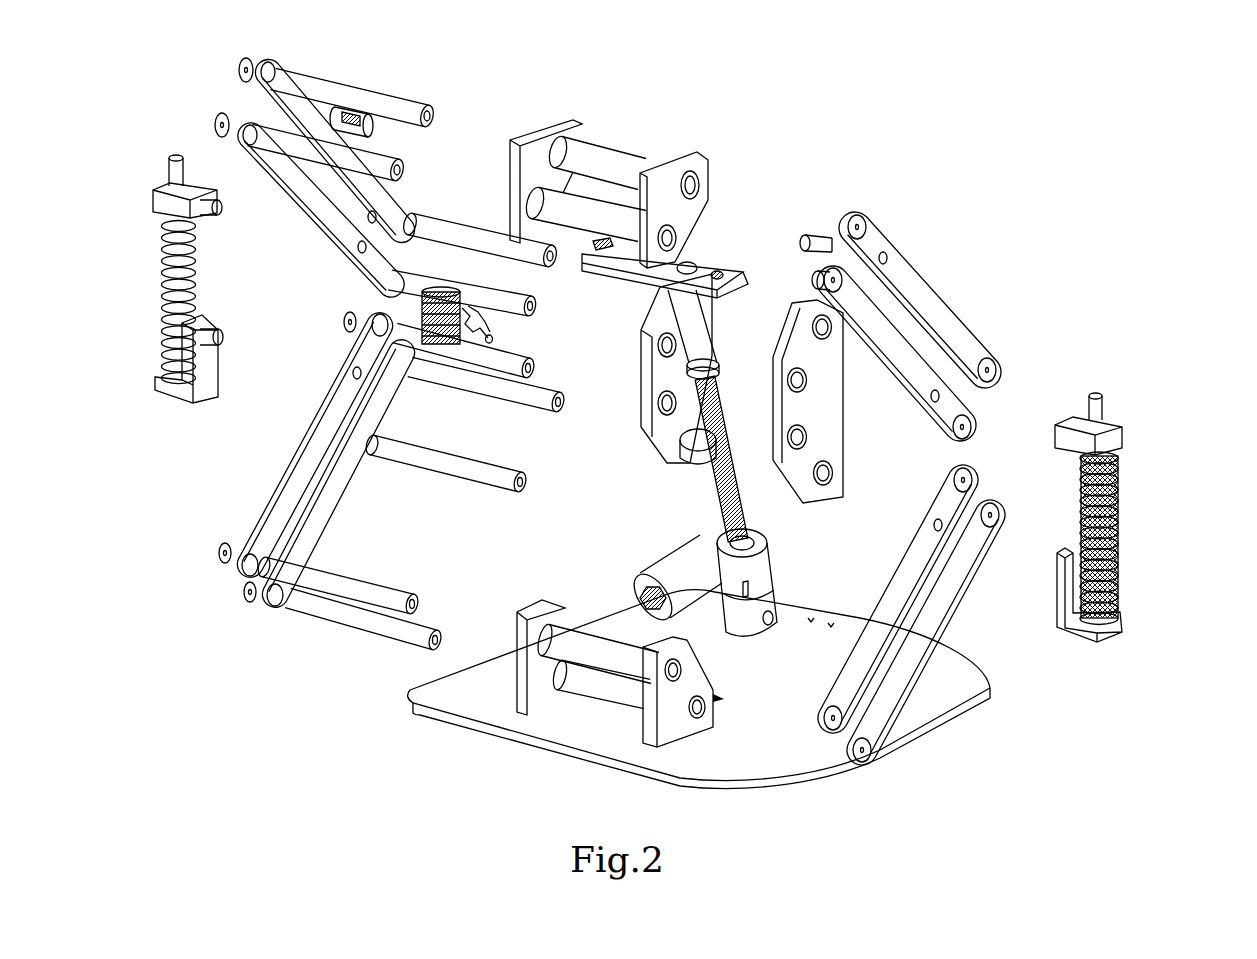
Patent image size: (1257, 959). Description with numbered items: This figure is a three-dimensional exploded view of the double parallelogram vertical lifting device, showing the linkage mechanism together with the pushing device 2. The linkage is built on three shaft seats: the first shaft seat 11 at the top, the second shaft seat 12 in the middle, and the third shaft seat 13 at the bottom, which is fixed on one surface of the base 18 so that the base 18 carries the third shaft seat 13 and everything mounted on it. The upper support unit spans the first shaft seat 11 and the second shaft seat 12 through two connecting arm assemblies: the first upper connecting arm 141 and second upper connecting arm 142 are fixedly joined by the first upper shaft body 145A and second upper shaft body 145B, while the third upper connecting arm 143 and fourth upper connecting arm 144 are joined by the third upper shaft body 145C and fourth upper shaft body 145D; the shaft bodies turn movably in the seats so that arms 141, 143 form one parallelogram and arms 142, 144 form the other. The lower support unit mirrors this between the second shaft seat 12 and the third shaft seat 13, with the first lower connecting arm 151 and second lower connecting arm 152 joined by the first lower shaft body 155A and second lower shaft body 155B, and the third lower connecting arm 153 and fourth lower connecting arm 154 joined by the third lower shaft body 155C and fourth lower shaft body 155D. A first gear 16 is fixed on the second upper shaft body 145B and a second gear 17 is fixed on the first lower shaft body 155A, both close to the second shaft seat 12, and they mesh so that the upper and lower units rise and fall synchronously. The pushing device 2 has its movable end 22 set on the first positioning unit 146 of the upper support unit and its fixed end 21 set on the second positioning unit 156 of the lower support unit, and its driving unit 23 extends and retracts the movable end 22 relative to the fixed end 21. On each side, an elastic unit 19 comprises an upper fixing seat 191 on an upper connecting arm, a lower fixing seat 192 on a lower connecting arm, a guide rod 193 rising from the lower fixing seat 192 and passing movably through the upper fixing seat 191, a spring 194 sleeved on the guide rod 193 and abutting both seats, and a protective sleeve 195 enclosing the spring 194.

The pushing device 2 is at (702, 556).
The first shaft seat 11 is at (690, 165).
The second shaft seat 12 is at (820, 410).
The third shaft seat 13 is at (650, 715).
The first gear 16 is at (462, 313).
The second gear 17 is at (482, 334).
The base 18 is at (470, 688).
The elastic unit 19 is at (634, 376).
The fixed end 21 is at (757, 534).
The movable end 22 is at (700, 465).
The driving unit 23 is at (694, 534).
The first upper connecting arm 141 is at (948, 413).
The second upper connecting arm 142 is at (246, 125).
The third upper connecting arm 143 is at (985, 345).
The fourth upper connecting arm 144 is at (266, 60).
The first upper shaft body 145A is at (330, 150).
The second upper shaft body 145B is at (405, 283).
The third upper shaft body 145C is at (372, 115).
The fourth upper shaft body 145D is at (430, 222).
The first positioning unit 146 is at (700, 262).
The first lower connecting arm 151 is at (955, 463).
The second lower connecting arm 152 is at (246, 564).
The third lower connecting arm 153 is at (980, 503).
The fourth lower connecting arm 154 is at (272, 610).
The first lower shaft body 155A is at (398, 332).
The second lower shaft body 155B is at (355, 590).
The third lower shaft body 155C is at (455, 380).
The fourth lower shaft body 155D is at (370, 628).
The second positioning unit 156 is at (470, 472).
The upper fixing seat 191 is at (160, 203).
The lower fixing seat 192 is at (180, 398).
The guide rod 193 is at (172, 162).
The spring 194 is at (1110, 480).
The protective sleeve 195 is at (162, 285).